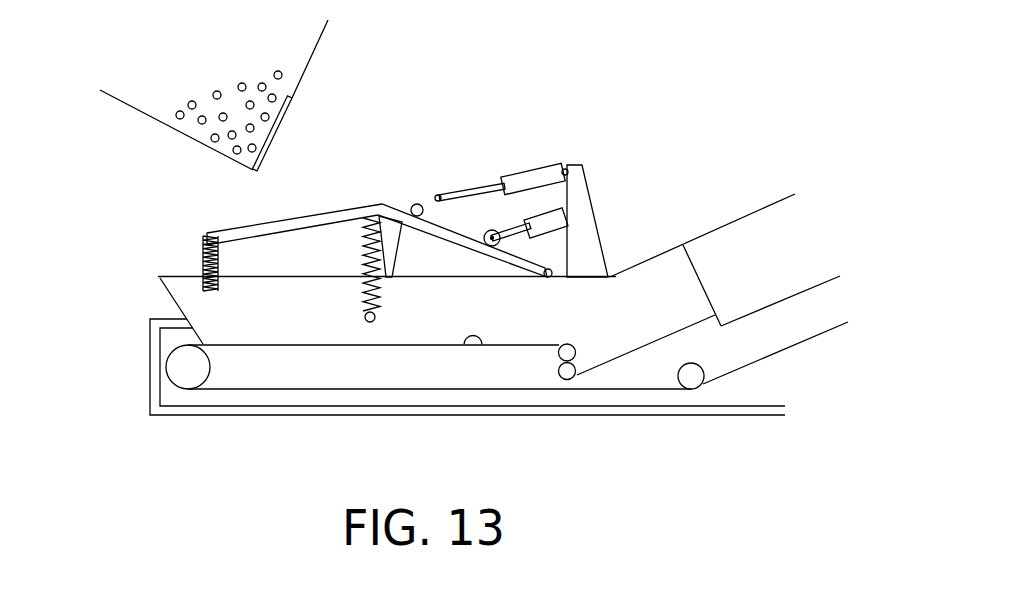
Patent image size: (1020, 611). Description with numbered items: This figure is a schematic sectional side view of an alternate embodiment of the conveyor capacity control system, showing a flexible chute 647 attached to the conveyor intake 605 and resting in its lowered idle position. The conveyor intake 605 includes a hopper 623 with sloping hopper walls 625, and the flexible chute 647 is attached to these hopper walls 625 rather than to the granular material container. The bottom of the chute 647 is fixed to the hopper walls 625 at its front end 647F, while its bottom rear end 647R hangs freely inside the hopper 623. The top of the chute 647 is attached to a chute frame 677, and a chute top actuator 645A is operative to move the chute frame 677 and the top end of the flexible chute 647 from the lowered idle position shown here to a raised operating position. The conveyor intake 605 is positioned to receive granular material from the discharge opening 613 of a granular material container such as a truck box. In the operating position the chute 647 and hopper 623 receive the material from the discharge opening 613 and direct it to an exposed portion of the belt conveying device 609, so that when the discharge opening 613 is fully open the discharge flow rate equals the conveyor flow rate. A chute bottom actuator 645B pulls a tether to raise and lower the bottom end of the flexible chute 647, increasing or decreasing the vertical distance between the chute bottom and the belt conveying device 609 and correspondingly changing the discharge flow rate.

The conveyor intake 605 is at (146, 242).
The discharge opening 613 is at (262, 133).
The chute frame 677 is at (352, 212).
The chute top actuator 645A is at (547, 238).
The chute bottom actuator 645B is at (520, 172).
The flexible chute 647 is at (209, 348).
The front end 647F is at (216, 292).
The bottom rear end 647R is at (368, 323).
The hopper 623 is at (160, 278).
The hopper walls 625 is at (195, 298).
The belt conveying device 609 is at (483, 348).